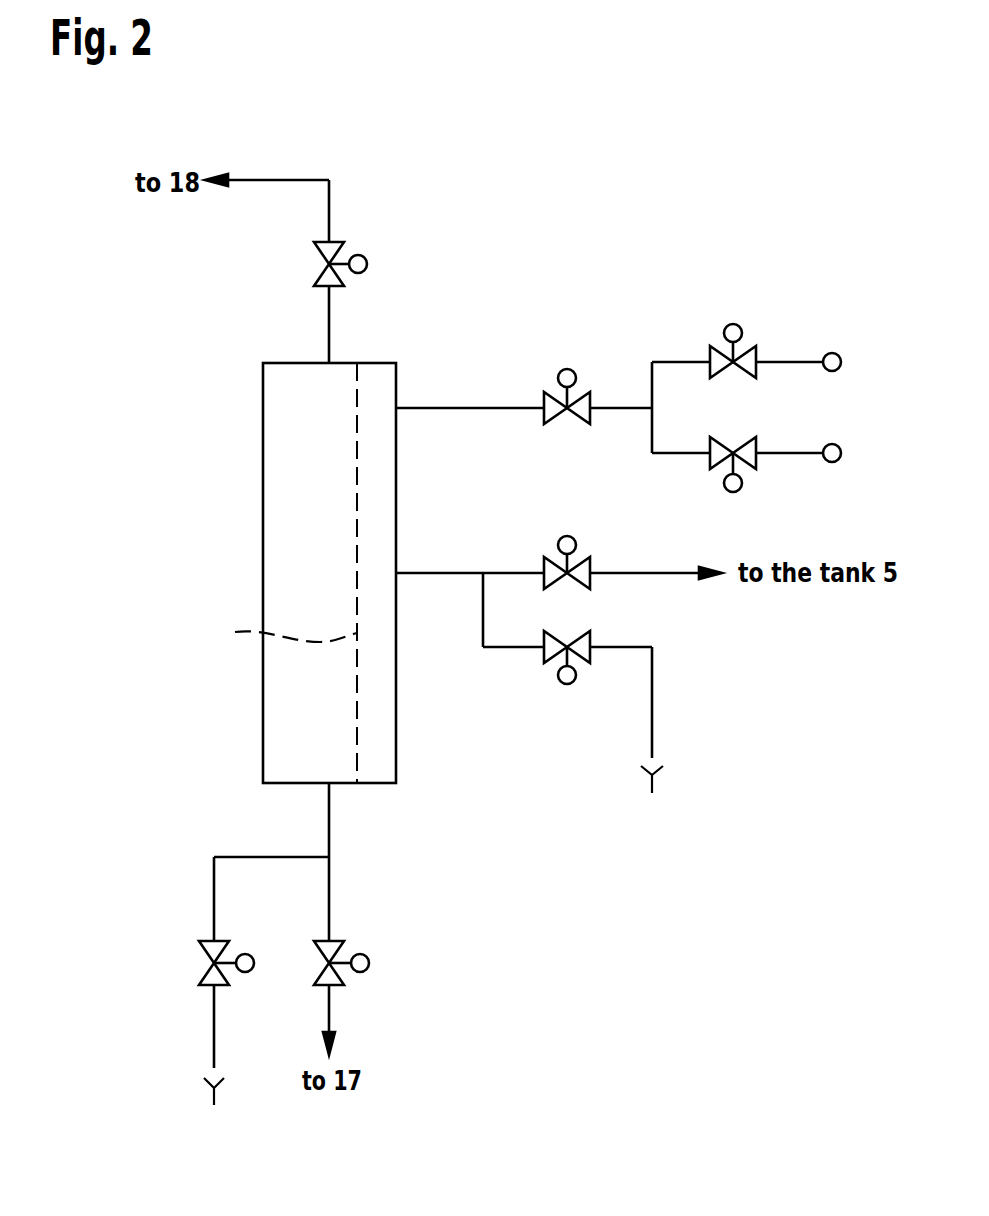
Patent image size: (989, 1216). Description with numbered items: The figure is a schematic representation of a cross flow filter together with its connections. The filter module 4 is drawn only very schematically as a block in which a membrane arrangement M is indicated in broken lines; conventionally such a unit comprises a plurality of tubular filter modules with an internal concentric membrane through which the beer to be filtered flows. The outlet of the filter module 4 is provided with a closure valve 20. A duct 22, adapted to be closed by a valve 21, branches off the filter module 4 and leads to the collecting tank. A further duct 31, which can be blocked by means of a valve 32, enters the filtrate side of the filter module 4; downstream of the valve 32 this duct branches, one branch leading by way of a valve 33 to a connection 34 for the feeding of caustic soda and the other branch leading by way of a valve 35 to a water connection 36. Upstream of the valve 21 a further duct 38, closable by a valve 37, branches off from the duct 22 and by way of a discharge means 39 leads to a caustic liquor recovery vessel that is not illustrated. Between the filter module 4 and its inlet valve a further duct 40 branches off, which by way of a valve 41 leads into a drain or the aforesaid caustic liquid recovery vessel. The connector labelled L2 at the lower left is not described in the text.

The filter module 4 is at (275, 388).
The closure valve 20 is at (318, 274).
The valve 21 is at (580, 561).
The duct 22 is at (438, 571).
The duct 31 is at (470, 406).
The valve 32 is at (556, 396).
The valve 33 is at (748, 350).
The connection 34 is at (831, 352).
The valve 35 is at (748, 470).
The water connection 36 is at (832, 463).
The valve 37 is at (548, 664).
The duct 38 is at (652, 695).
The discharge means 39 is at (658, 775).
The duct 40 is at (214, 893).
The valve 41 is at (325, 945).
The membrane arrangement M is at (283, 635).
The line L2 connector L2 is at (212, 1090).